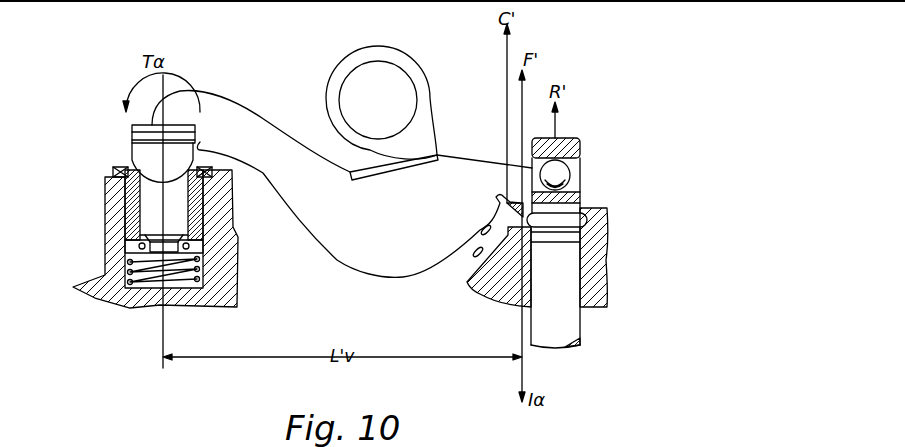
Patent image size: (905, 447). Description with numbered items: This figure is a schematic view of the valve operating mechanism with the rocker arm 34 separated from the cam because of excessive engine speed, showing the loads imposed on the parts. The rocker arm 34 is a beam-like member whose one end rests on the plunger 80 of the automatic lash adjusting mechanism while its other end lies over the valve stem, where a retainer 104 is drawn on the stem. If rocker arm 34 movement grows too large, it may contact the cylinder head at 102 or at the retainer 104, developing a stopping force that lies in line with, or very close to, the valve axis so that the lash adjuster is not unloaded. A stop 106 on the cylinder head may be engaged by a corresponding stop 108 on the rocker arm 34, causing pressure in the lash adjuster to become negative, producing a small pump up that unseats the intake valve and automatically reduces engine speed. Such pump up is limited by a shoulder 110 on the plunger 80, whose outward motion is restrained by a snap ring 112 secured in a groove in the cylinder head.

The rocker arm 34 is at (322, 238).
The plunger 80 is at (140, 219).
The cylinder head contact location 102 is at (502, 204).
The valve spring retainer 104 is at (567, 222).
The stop 106 is at (468, 282).
The stop 108 is at (483, 229).
The shoulder 110 is at (128, 189).
The snap ring 112 is at (113, 172).